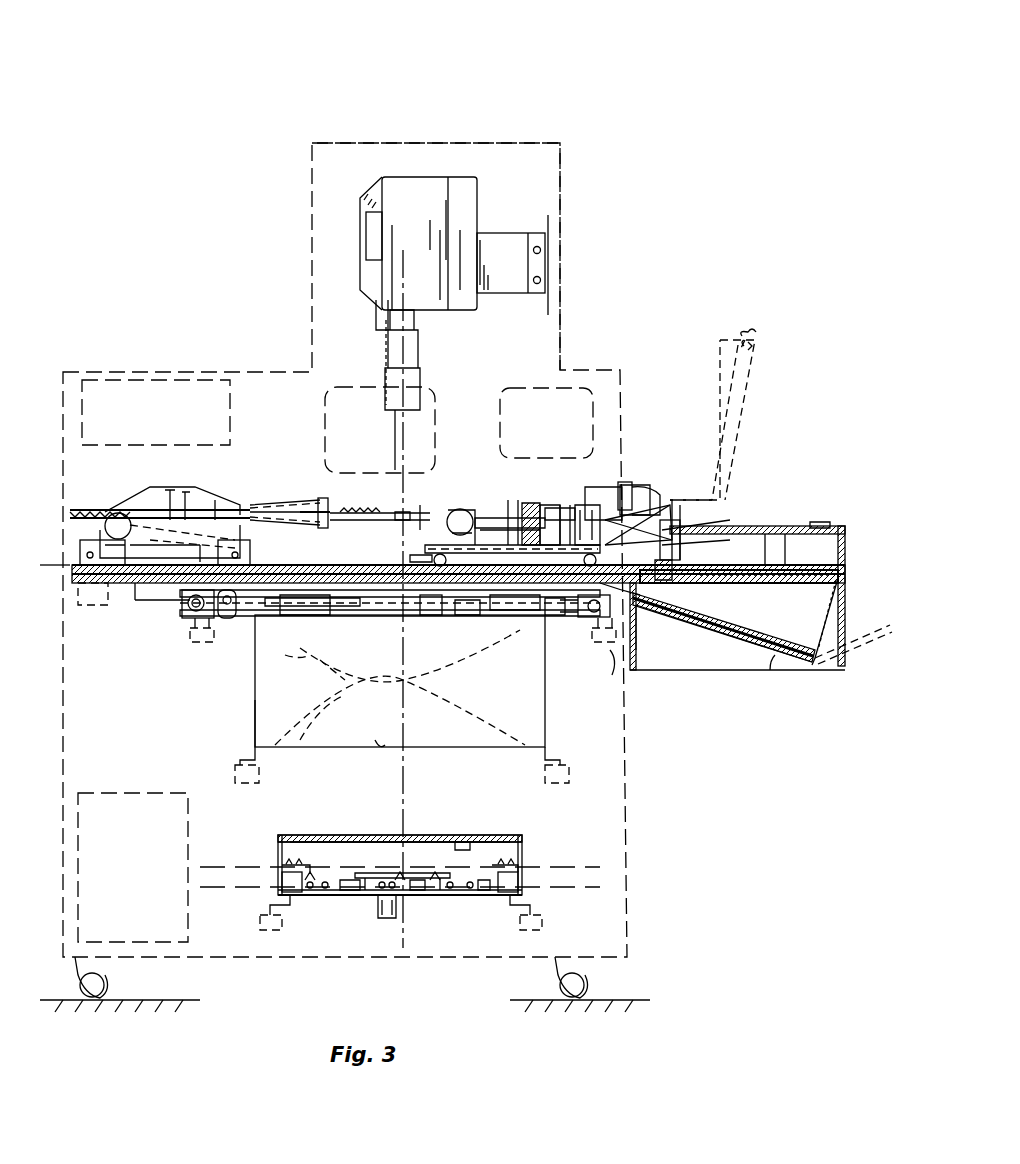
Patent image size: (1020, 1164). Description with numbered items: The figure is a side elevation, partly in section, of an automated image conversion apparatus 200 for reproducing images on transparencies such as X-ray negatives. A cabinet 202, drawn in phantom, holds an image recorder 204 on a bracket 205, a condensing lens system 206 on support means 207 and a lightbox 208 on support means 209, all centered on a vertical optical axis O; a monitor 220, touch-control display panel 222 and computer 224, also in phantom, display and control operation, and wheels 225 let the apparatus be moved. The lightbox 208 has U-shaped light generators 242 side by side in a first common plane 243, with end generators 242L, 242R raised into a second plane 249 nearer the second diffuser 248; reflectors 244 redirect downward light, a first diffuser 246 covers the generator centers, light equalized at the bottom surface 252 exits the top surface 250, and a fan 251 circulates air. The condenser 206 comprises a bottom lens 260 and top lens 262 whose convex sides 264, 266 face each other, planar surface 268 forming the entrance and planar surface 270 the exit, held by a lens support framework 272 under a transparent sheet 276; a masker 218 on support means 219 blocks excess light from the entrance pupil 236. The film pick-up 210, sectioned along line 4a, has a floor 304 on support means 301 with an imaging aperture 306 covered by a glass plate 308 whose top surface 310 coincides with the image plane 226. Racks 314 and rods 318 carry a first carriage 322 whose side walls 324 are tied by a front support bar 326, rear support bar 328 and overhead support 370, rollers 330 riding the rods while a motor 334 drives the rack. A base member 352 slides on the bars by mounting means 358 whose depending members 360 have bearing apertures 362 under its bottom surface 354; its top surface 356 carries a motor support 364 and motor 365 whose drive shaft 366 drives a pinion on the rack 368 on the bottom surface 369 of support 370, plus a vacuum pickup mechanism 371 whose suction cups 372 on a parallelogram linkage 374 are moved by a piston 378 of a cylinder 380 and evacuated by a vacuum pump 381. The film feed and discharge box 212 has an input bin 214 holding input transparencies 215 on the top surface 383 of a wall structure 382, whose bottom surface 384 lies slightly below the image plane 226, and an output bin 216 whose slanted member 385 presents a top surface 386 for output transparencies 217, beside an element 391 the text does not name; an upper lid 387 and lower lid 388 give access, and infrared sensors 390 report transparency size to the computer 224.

The automated image conversion apparatus 200 is at (553, 105).
The cabinet 202 is at (312, 200).
The image recorder 204 is at (392, 177).
The bracket 205 is at (512, 233).
The optical axis O is at (392, 270).
The computer 224 is at (165, 380).
The touch-control plasma display panel 222 is at (345, 387).
The entrance pupil 236 is at (396, 410).
The monitor 220 is at (508, 388).
The top surface 310 is at (335, 562).
The rack 314 is at (100, 512).
The section line 4a is at (268, 472).
The glass plate 308 is at (295, 533).
The imaging aperture 306 is at (330, 530).
The mounting means 358 is at (420, 555).
The depending member 360 is at (415, 562).
The first carriage 322 is at (405, 520).
The bottom surface 354 is at (428, 515).
The motor 334 is at (456, 510).
The cylinder 380 is at (500, 520).
The side walls 324 is at (515, 510).
The rack 368 is at (528, 505).
The bottom surface 369 is at (538, 505).
The overhead support 370 is at (548, 500).
The drive shaft 366 is at (535, 452).
The motor 365 is at (572, 502).
The motor support 364 is at (600, 482).
The bearing aperture 362 is at (580, 560).
The film pick-up 210 is at (590, 490).
The piston 378 is at (615, 480).
The vacuum pickup mechanism 371 is at (630, 485).
The infrared sensors 390 is at (632, 490).
The parallelogram linkage 374 is at (672, 500).
The suction cups 372 is at (685, 556).
The upper lid 387 is at (748, 392).
The film feed and discharge box 212 is at (792, 512).
The top surface 383 is at (762, 526).
The bottom surface 384 is at (784, 530).
The film input bin 214 is at (762, 556).
The input transparency 215 is at (788, 568).
The film output bin 216 is at (780, 612).
The wall structure 382 is at (800, 585).
The lip 391 is at (650, 585).
The slanted member 385 is at (700, 625).
The top surface 386 is at (760, 635).
The output transparencies 217 is at (768, 655).
The lower lid 388 is at (845, 620).
The support means 301 is at (78, 600).
The floor 304 is at (140, 590).
The rod 318 is at (130, 583).
The masking mechanism 218 is at (190, 612).
The support means 219 is at (205, 640).
The image plane 226 is at (55, 575).
The transparent sheet 276 is at (355, 612).
The planar surface 270 is at (270, 612).
The rear support bar 328 is at (430, 598).
The roller 330 is at (465, 612).
The base member 352 is at (510, 600).
The top surface 356 is at (545, 628).
The front support bar 326 is at (610, 640).
The condensing lens system 206 is at (230, 705).
The lens support framework 272 is at (255, 735).
The second or top lens 262 is at (305, 655).
The convex side 266 is at (330, 665).
The planar surface 268 is at (380, 745).
The convex side 264 is at (318, 700).
The first or bottom lens 260 is at (305, 740).
The support means 207 is at (235, 770).
The lightbox 208 is at (370, 830).
The second diffuser 248 is at (430, 835).
The top surface 250 is at (342, 836).
The bottom surface 252 is at (462, 845).
The left light generator 242L is at (290, 860).
The right light generator 242R is at (512, 860).
The first diffuser 246 is at (385, 868).
The light generators 242 is at (458, 885).
The reflectors 244 is at (320, 895).
The fan 251 is at (385, 915).
The second common plane 249 is at (596, 850).
The first common plane 243 is at (600, 880).
The support means 209 is at (262, 925).
The vacuum pump 381 is at (118, 770).
The wheels 225 is at (112, 985).